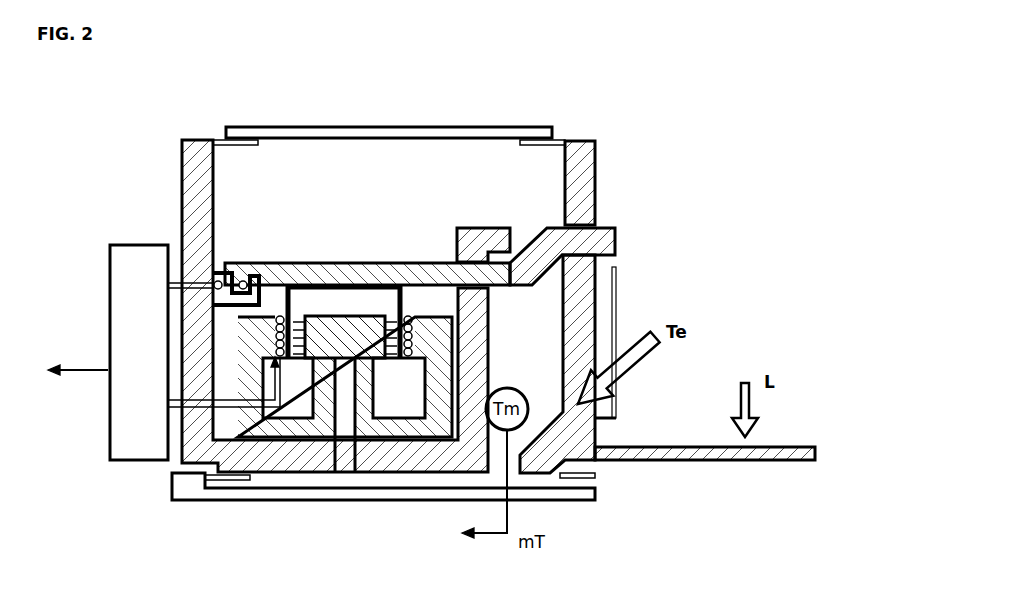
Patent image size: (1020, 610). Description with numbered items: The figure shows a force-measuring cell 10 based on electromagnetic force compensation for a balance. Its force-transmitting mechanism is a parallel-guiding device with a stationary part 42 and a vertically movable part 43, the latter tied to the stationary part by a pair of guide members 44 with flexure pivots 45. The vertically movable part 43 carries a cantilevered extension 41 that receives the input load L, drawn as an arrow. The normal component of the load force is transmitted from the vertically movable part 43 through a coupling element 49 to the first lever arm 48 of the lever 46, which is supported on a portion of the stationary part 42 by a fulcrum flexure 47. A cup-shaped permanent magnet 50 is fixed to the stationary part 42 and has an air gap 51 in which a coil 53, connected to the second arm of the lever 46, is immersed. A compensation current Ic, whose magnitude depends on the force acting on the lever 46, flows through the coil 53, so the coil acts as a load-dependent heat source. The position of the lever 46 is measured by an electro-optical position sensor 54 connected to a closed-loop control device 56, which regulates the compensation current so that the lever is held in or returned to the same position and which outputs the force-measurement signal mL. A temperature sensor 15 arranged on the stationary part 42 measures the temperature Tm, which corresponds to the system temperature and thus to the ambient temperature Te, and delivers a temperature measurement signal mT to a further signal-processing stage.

The force-measuring cell 10 is at (680, 116).
The temperature sensor 15 is at (527, 420).
The cantilevered extension 41 is at (680, 447).
The stationary part 42 is at (200, 196).
The vertically movable part 43 is at (592, 173).
The guide members 44 is at (352, 131).
The flexure pivots 45 is at (216, 136).
The lever 46 is at (410, 262).
The fulcrum flexure 47 is at (510, 258).
The first lever arm 48 is at (600, 246).
The coupling element 49 is at (618, 300).
The permanent magnet 50 is at (385, 427).
The air gap 51 is at (416, 322).
The coil 53 is at (416, 338).
The electro-optical position sensor 54 is at (213, 272).
The closed-loop control device 56 is at (143, 437).